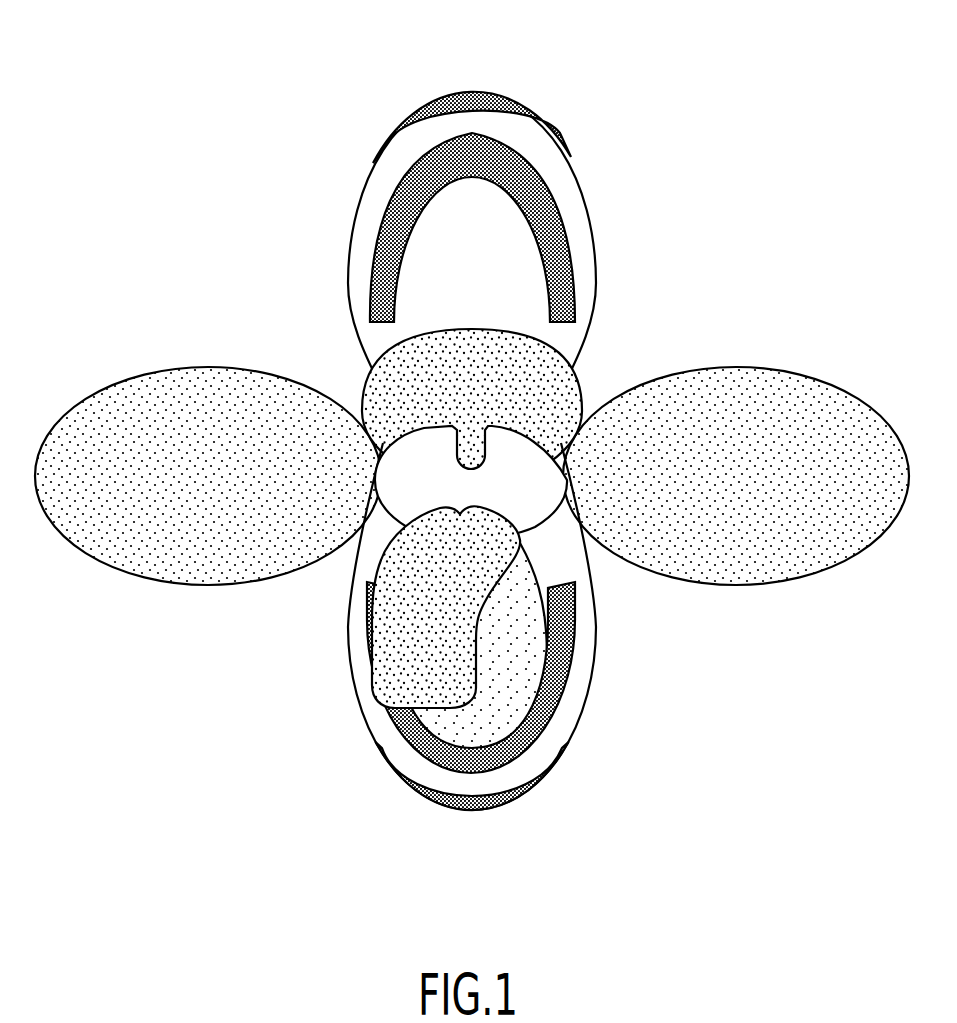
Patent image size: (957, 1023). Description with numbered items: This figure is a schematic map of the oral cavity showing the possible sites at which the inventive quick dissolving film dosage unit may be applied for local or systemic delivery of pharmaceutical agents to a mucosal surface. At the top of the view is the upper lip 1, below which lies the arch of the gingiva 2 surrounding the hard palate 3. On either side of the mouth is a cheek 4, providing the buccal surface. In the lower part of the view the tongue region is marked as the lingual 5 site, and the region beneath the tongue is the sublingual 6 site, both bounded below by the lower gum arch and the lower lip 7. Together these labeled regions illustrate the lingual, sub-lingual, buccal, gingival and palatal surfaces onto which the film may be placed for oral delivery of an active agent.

The upper lip 1 is at (468, 98).
The gingiva 2 is at (550, 219).
The hard palate 3 is at (493, 283).
The cheek 4 is at (758, 543).
The lingual 5 is at (387, 643).
The sublingual 6 is at (517, 673).
The lower lip 7 is at (463, 810).